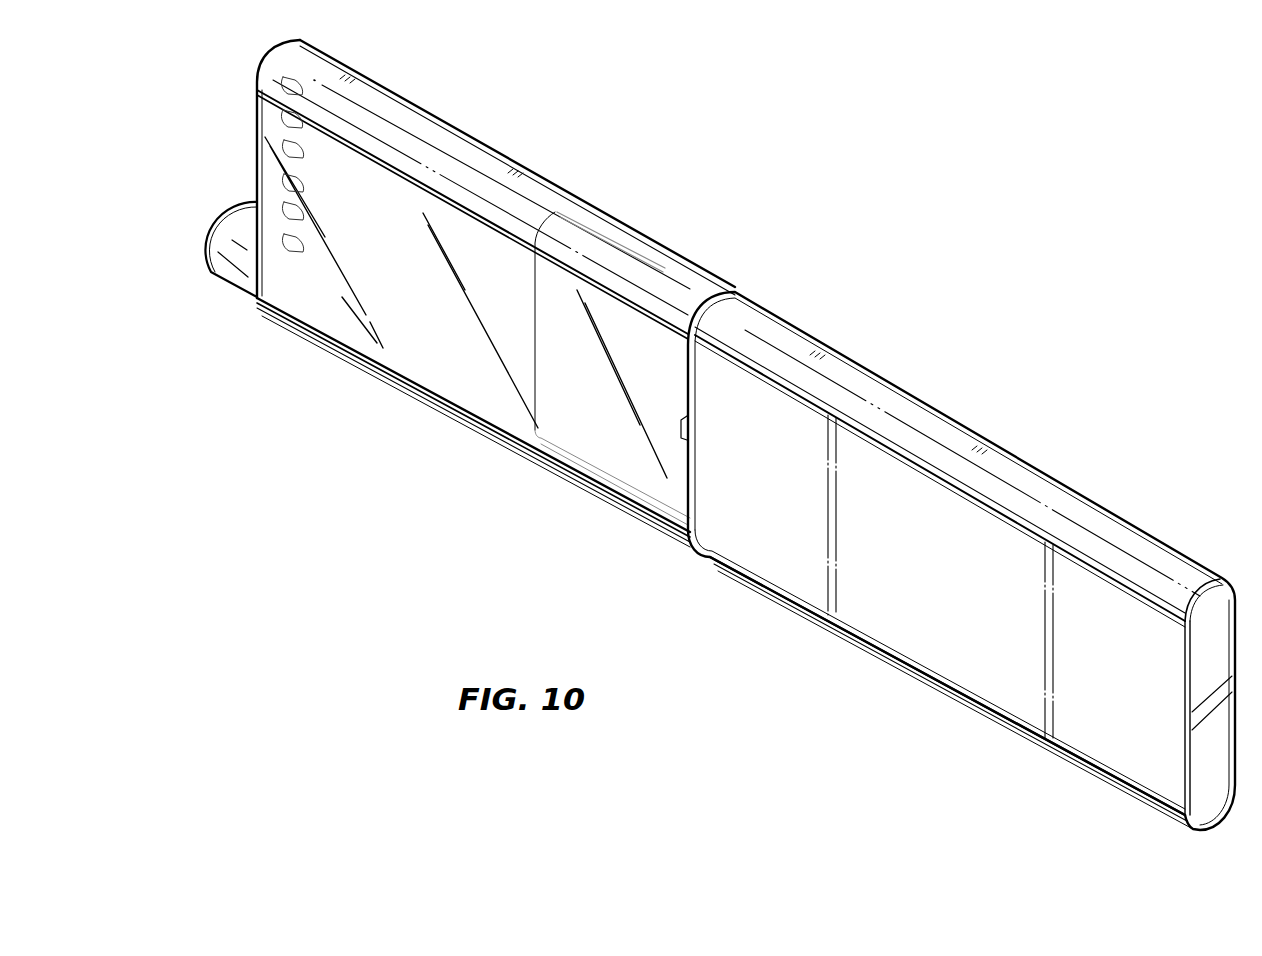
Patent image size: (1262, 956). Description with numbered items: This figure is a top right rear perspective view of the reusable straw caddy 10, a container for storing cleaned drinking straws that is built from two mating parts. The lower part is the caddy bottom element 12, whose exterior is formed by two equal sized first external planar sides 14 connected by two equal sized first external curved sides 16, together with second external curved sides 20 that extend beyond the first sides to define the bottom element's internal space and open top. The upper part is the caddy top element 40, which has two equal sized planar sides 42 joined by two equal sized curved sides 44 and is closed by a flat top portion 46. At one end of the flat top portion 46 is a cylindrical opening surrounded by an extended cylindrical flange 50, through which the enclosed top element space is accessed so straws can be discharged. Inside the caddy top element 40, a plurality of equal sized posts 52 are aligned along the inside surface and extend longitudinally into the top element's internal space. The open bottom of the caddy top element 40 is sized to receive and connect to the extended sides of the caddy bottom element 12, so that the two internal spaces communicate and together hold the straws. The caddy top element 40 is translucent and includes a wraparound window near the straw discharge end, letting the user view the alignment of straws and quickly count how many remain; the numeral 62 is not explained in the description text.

The reusable straw caddy 10 is at (882, 178).
The caddy bottom element 12 is at (997, 672).
The first external planar sides 14 is at (927, 620).
The first external curved sides 16 is at (1000, 471).
The second external curved sides 20 is at (553, 213).
The caddy top element 40 is at (478, 373).
The planar sides 42 is at (410, 318).
The curved sides 44 is at (430, 118).
The flat top portion 46 is at (256, 120).
The extended cylindrical flange 50 is at (244, 277).
The posts 52 is at (289, 247).
The display region 62 is at (482, 303).